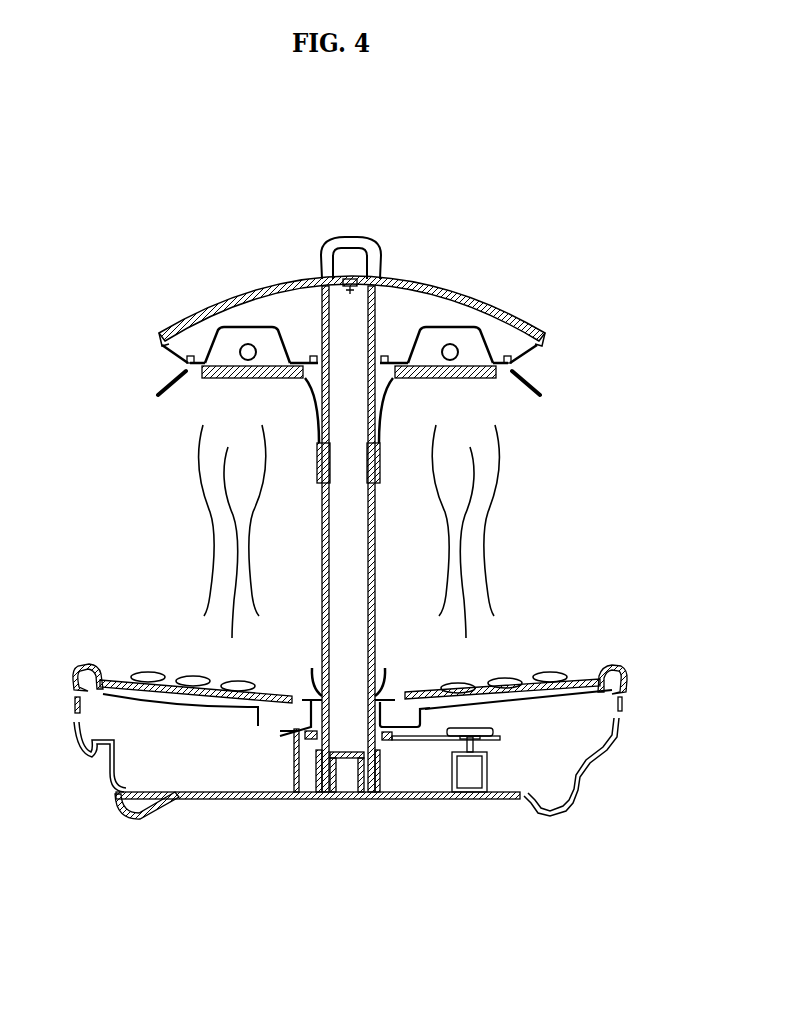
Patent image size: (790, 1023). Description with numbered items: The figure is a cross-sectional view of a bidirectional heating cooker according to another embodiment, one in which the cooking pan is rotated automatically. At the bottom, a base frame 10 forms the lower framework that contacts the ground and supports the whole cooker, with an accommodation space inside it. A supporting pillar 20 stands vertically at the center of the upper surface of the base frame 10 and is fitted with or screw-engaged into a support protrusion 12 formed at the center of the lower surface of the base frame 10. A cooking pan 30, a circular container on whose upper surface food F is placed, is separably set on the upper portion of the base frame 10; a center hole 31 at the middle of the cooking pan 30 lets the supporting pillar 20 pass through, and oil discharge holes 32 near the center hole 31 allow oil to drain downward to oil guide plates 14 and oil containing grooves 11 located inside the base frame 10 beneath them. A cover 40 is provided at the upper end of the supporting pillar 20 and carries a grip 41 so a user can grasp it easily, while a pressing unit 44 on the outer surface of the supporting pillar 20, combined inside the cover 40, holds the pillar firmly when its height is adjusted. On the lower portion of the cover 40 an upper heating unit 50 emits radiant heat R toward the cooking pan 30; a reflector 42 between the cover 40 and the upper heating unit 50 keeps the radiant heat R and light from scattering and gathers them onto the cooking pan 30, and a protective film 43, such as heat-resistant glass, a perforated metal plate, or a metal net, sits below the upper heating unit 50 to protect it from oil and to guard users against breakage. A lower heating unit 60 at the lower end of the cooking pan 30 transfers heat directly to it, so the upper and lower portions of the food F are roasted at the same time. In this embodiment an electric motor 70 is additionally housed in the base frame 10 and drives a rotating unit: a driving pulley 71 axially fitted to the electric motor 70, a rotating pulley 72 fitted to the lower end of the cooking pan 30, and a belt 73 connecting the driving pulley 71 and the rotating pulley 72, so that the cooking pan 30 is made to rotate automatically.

The base frame 10 is at (602, 760).
The oil containing grooves 11 is at (158, 795).
The support protrusion 12 is at (371, 792).
The oil guide plates 14 is at (252, 717).
The supporting pillar 20 is at (322, 597).
The cooking pan 30 is at (533, 680).
The center hole 31 is at (368, 687).
The oil discharge holes 32 is at (293, 697).
The cover 40 is at (410, 274).
The grip 41 is at (347, 240).
The reflector 42 is at (228, 328).
The protective film 43 is at (217, 386).
The pressing unit 44 is at (399, 410).
The upper heating unit 50 is at (250, 343).
The lower heating unit 60 is at (135, 693).
The electric motor 70 is at (465, 792).
The driving pulley 71 is at (490, 746).
The rotating pulley 72 is at (303, 792).
The belt 73 is at (437, 741).
The radiant heat R is at (217, 502).
The food F is at (147, 673).